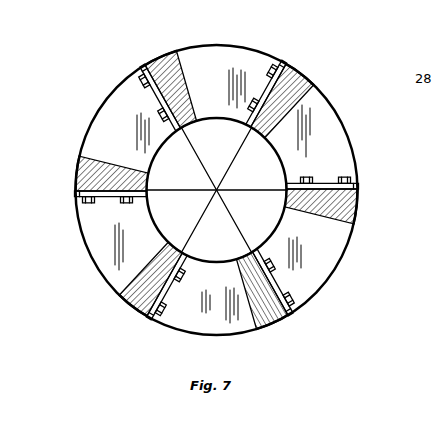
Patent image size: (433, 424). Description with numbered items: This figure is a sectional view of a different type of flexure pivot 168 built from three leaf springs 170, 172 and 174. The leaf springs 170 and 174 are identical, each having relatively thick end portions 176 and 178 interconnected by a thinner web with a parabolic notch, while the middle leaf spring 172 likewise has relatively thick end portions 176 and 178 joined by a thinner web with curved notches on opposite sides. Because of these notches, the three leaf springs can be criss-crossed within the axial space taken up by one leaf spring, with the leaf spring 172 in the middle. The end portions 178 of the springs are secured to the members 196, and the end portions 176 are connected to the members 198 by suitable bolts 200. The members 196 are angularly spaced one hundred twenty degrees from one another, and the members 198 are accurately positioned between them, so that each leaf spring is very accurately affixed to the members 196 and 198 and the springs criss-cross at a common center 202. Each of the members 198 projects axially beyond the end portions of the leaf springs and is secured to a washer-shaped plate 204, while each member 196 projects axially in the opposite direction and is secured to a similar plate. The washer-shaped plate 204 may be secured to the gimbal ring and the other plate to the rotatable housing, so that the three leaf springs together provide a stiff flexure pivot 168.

The flexure pivot 168 is at (372, 281).
The leaf spring 170 is at (194, 151).
The leaf spring 172 is at (155, 187).
The leaf spring 174 is at (233, 158).
The end portion 176 is at (145, 70).
The end portion 178 is at (285, 63).
The member 196 is at (300, 70).
The member 198 is at (170, 52).
The bolt 200 is at (274, 70).
The center 202 is at (219, 192).
The washer-shaped plate 204 is at (95, 118).